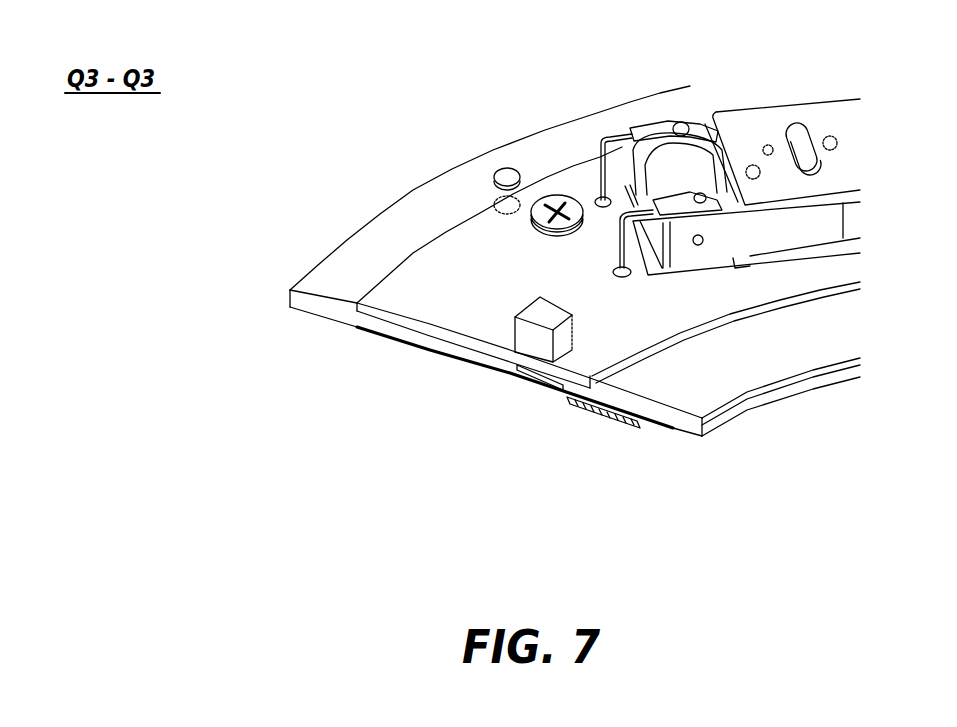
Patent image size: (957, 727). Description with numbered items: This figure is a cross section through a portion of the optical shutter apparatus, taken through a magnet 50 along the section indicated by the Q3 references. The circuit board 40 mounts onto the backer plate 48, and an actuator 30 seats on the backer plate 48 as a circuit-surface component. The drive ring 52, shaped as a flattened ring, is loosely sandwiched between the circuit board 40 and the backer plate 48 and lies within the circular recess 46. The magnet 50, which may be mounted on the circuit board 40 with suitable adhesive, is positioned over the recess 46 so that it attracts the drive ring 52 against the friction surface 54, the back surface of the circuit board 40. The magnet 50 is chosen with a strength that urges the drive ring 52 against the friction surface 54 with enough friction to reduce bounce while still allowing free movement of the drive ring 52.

The actuator 30 is at (782, 104).
The circuit board 40 is at (493, 205).
The recess 46 is at (543, 374).
The backer plate 48 is at (327, 253).
The magnet 50 is at (526, 298).
The drive ring 52 is at (507, 360).
The friction surface 54 is at (518, 357).